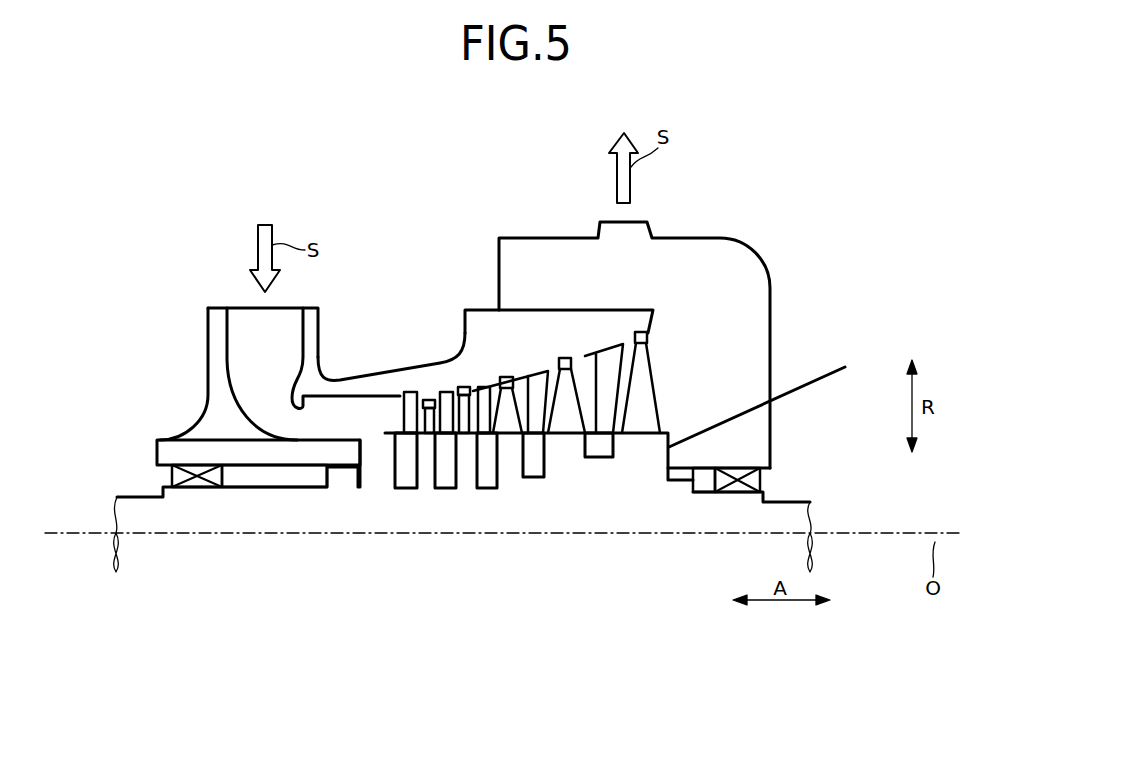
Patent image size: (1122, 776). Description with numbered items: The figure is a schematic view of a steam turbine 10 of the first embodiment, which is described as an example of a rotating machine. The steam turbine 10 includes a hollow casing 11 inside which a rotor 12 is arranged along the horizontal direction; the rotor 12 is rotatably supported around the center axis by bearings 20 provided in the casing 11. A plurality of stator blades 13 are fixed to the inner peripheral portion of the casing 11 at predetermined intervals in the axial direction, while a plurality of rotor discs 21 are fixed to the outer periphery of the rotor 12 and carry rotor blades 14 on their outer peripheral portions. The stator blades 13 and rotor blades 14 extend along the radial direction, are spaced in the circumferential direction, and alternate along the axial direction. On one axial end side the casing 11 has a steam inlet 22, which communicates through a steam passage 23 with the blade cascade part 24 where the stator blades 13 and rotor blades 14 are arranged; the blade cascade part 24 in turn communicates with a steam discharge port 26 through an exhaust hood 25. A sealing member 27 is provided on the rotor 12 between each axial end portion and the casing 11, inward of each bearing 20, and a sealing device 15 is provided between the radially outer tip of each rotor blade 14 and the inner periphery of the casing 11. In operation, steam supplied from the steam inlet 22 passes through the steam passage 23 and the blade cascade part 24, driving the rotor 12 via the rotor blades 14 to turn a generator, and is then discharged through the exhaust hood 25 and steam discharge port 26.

The steam turbine 10 is at (447, 232).
The casing 11 is at (220, 420).
The rotor 12 is at (432, 517).
The stator blades 13 is at (490, 410).
The rotor blades 14 is at (428, 400).
The sealing device 15 is at (464, 387).
The bearings 20 is at (196, 480).
The rotor discs 21 is at (427, 457).
The steam inlet 22 is at (240, 320).
The steam passage 23 is at (355, 395).
The blade cascade part 24 is at (600, 352).
The exhaust hood 25 is at (760, 352).
The steam discharge port 26 is at (647, 222).
The sealing member 27 is at (343, 470).